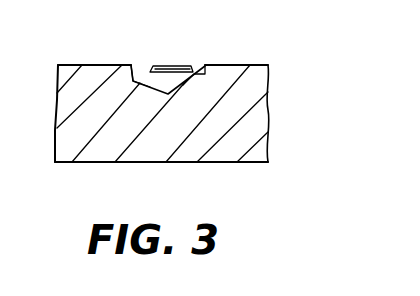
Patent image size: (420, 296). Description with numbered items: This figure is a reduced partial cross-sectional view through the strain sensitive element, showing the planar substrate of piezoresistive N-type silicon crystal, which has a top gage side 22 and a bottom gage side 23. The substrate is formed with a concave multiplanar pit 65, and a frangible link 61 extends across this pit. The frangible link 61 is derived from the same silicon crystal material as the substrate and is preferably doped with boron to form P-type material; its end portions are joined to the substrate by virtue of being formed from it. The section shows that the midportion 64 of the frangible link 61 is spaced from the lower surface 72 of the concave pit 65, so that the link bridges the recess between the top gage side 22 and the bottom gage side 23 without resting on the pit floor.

The top gage side 22 is at (253, 63).
The bottom gage side 23 is at (233, 165).
The frangible link 61 is at (172, 65).
The midportion 64 is at (160, 65).
The concave multiplanar pit 65 is at (140, 72).
The lower surface 72 is at (205, 65).